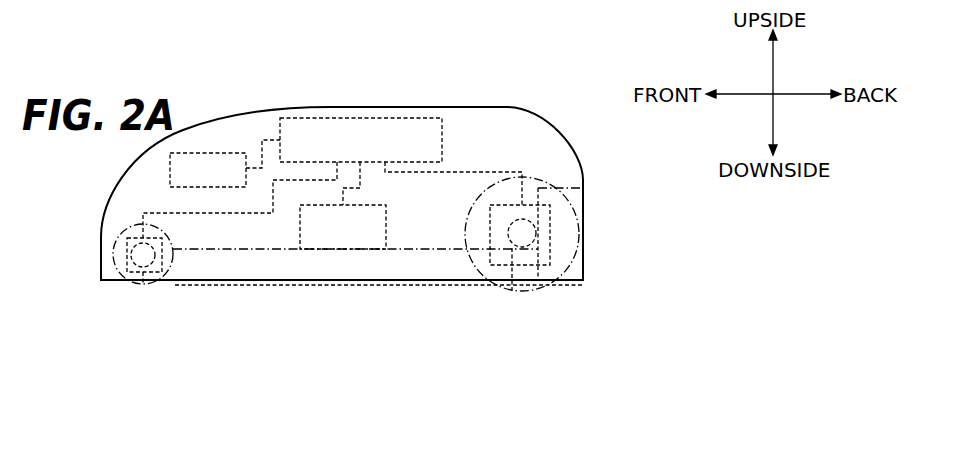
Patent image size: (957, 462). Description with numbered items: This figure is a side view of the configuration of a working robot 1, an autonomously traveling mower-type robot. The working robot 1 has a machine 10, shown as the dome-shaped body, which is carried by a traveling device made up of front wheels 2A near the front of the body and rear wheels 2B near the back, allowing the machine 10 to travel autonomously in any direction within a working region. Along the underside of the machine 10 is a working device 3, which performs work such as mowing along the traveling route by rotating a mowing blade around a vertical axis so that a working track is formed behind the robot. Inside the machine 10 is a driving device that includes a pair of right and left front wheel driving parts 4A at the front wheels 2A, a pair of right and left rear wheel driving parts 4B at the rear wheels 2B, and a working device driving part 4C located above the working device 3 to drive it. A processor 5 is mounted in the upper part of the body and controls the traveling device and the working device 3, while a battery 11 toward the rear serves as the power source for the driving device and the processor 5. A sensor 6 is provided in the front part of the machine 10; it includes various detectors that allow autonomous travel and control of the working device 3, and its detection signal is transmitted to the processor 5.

The working robot 1 is at (478, 71).
The machine 10 is at (530, 115).
The working device 3 is at (297, 284).
The processor 5 is at (348, 107).
The sensor 6 is at (205, 152).
The battery 11 is at (583, 178).
The front wheel driving parts 4A is at (127, 227).
The rear wheel driving parts 4B is at (552, 213).
The working device driving part 4C is at (393, 233).
The front wheels 2A is at (143, 284).
The rear wheels 2B is at (512, 292).